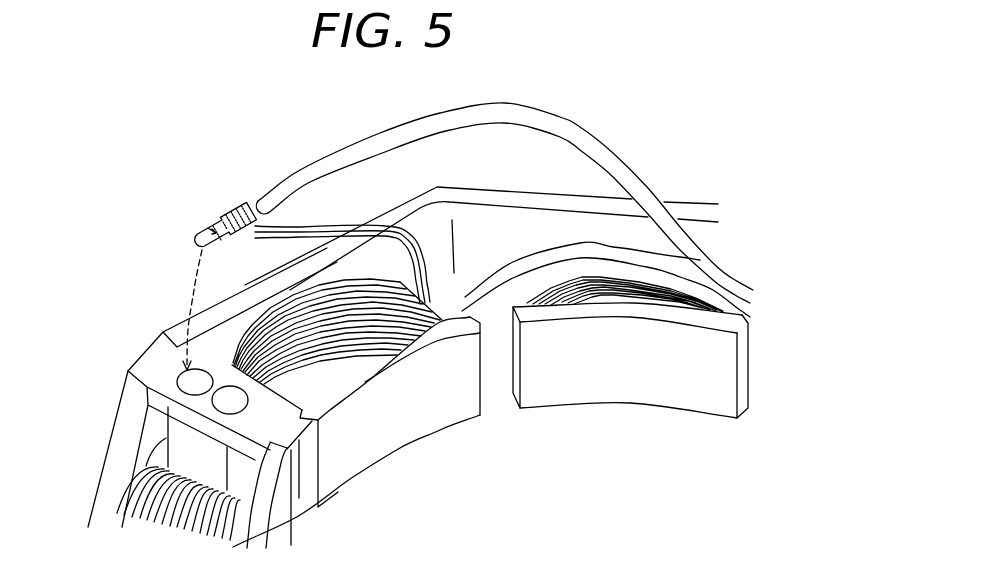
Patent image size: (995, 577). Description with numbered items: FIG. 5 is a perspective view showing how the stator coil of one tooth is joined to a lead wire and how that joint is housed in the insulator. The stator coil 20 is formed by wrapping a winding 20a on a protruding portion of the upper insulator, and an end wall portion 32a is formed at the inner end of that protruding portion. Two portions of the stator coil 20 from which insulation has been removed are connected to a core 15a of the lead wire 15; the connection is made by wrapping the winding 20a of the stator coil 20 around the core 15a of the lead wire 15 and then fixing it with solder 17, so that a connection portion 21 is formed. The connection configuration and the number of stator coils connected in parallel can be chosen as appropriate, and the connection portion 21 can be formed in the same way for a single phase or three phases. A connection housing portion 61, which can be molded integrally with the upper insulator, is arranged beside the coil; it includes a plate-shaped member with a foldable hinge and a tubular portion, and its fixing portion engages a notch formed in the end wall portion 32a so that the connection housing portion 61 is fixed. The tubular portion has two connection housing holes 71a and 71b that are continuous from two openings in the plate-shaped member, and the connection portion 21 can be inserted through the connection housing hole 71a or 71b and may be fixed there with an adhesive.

The lead wire 15 is at (517, 103).
The core of the lead wire 15a is at (249, 201).
The solder 17 is at (213, 217).
The stator coil 20 is at (347, 333).
The winding 20a is at (296, 226).
The connection portion 21 is at (227, 193).
The end wall portion 32a is at (393, 418).
The connection housing portion 61 is at (141, 336).
The connection housing hole 71a is at (178, 376).
The connection housing hole 71b is at (227, 404).